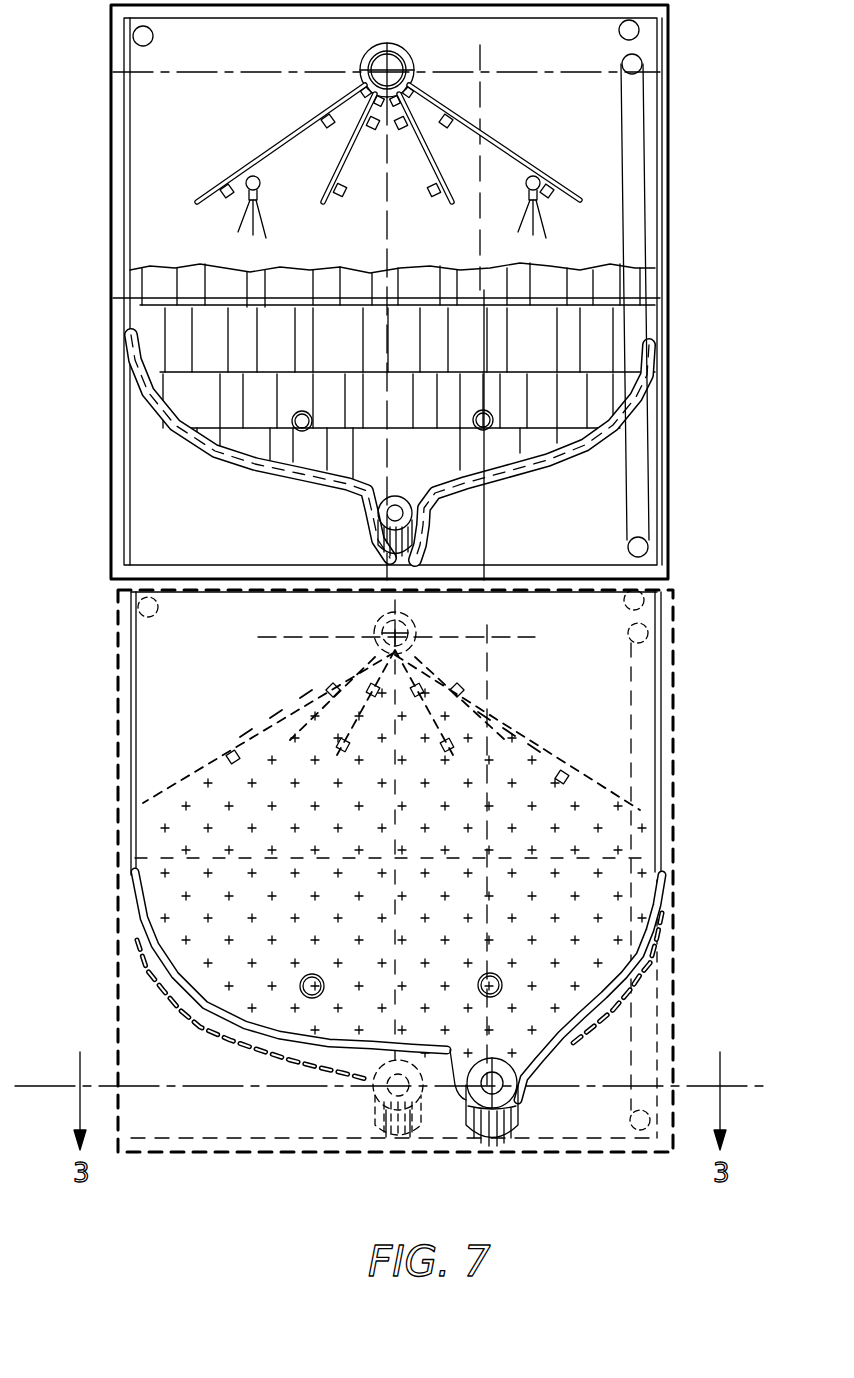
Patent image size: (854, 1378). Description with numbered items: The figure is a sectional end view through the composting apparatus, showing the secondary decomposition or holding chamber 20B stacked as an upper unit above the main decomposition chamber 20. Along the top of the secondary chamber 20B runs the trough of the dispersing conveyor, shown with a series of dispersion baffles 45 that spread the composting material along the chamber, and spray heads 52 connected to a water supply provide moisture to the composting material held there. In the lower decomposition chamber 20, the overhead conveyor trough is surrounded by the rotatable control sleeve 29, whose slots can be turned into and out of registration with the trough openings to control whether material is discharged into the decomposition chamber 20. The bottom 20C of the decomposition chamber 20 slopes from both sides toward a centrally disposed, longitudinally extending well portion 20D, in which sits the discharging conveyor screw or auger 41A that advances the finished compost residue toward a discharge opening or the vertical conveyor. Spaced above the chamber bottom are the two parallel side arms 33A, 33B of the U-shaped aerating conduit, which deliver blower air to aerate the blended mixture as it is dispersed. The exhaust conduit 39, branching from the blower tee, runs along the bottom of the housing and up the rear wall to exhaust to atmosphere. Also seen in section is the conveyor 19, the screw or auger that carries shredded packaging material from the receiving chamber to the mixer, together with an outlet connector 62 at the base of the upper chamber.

The dispersion baffles 45 is at (508, 147).
The spray heads 52 is at (262, 184).
The secondary decomposition or holding chamber 20B is at (601, 174).
The outlet connector 62 is at (367, 518).
The rotatable control sleeve 29 is at (418, 620).
The decomposition chamber 20 is at (590, 672).
The exhaust conduit 39 is at (641, 726).
The side arm of aerating conduit 33B is at (318, 975).
The side arm of aerating conduit 33A is at (502, 981).
The bottom of the decomposition chamber 20C is at (238, 1023).
The discharging conveyor screw or auger 41A is at (375, 1090).
The well portion 20D is at (393, 1137).
The conveyor 19 is at (516, 1108).